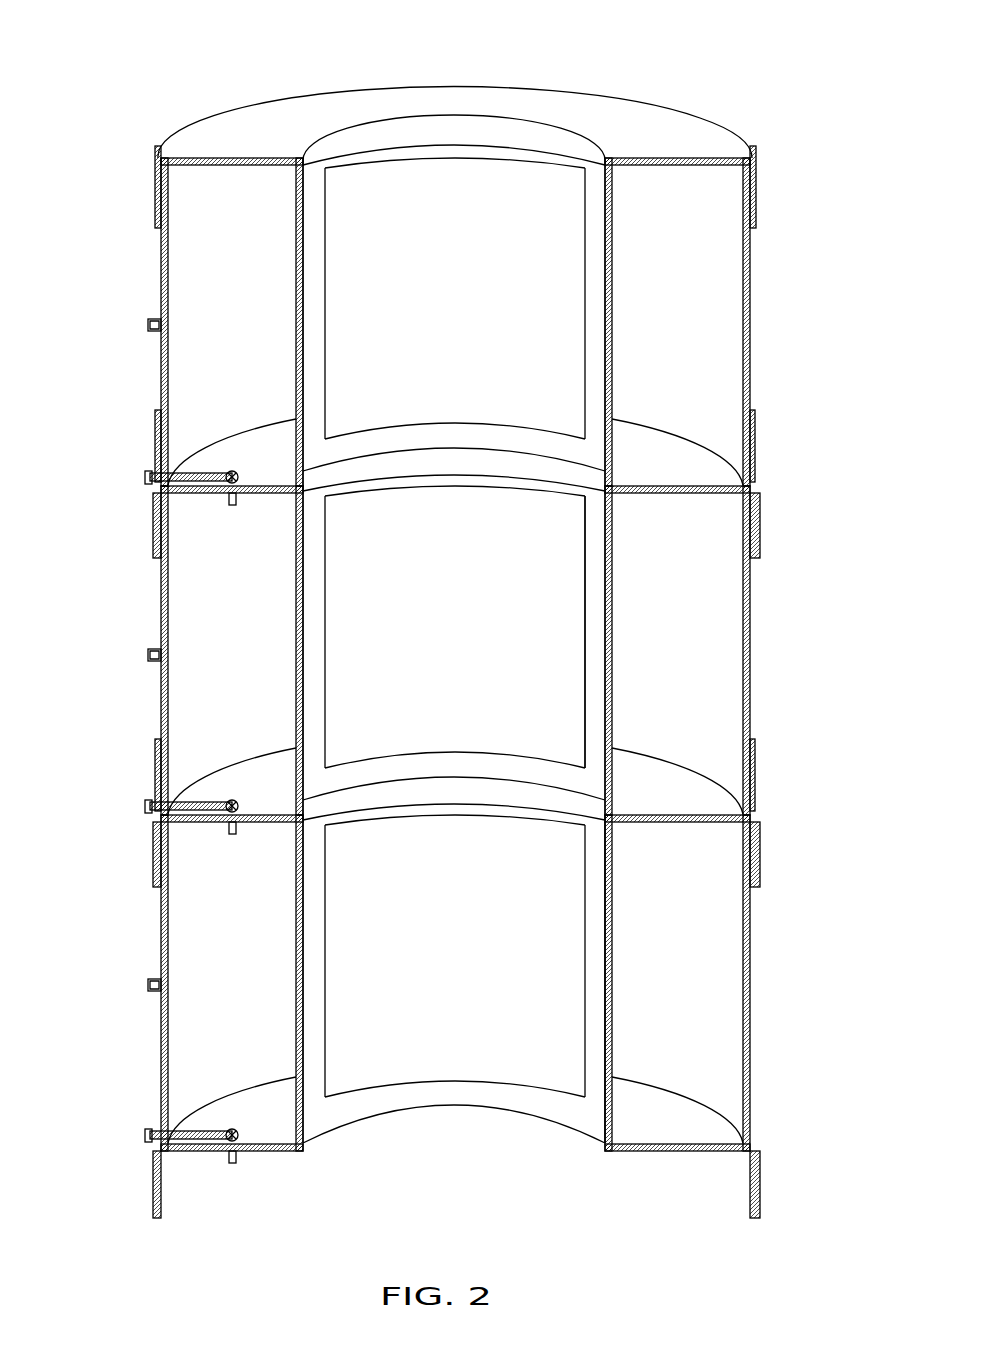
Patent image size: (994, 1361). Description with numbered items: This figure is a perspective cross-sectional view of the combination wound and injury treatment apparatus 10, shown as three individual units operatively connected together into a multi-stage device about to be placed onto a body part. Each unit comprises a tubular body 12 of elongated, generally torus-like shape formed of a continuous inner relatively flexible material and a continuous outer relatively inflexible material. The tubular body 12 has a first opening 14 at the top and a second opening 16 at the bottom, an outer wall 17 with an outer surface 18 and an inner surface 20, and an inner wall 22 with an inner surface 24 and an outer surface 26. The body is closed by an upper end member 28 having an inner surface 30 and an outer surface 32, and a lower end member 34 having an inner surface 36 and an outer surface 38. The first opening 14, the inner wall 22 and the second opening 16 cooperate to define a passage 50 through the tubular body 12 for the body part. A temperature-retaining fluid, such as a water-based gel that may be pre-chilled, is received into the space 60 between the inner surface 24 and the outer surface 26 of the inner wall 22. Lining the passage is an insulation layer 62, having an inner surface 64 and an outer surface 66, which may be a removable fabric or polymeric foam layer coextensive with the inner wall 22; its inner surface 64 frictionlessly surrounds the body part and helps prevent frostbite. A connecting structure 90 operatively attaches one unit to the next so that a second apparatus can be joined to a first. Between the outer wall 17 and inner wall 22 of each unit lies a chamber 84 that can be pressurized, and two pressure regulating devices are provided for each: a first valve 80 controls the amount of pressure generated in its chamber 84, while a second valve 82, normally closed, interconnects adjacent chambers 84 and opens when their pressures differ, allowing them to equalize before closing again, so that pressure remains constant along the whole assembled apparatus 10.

The combination wound and injury treatment apparatus 10 is at (140, 68).
The tubular body 12 is at (753, 648).
The first opening 14 is at (362, 120).
The second opening 16 is at (362, 1126).
The outer wall 17 is at (751, 985).
The outer surface 18 is at (751, 328).
The inner surface 20 is at (740, 300).
The inner wall 22 is at (595, 380).
The inner surface 24 is at (590, 622).
The outer surface 26 is at (615, 628).
The upper end member 28 is at (659, 148).
The inner surface 30 is at (687, 168).
The outer surface 32 is at (714, 143).
The lower end member 34 is at (638, 1156).
The inner surface 36 is at (660, 1143).
The outer surface 38 is at (686, 1154).
The passage 50 is at (474, 545).
The space 60 is at (440, 145).
The insulation layer 62 is at (598, 1108).
The inner surface 64 is at (595, 953).
The outer surface 66 is at (615, 962).
The first valve 80 is at (147, 325).
The second valve 82 is at (147, 477).
The chamber 84 is at (190, 270).
The connecting structure 90 is at (158, 186).